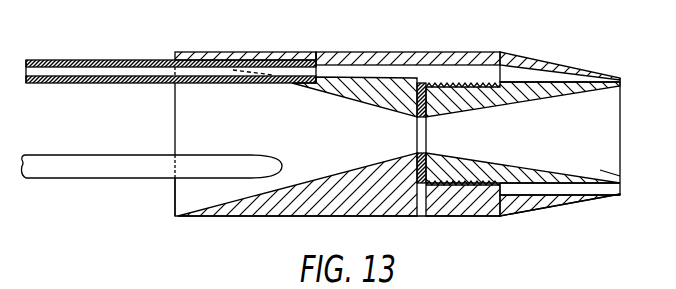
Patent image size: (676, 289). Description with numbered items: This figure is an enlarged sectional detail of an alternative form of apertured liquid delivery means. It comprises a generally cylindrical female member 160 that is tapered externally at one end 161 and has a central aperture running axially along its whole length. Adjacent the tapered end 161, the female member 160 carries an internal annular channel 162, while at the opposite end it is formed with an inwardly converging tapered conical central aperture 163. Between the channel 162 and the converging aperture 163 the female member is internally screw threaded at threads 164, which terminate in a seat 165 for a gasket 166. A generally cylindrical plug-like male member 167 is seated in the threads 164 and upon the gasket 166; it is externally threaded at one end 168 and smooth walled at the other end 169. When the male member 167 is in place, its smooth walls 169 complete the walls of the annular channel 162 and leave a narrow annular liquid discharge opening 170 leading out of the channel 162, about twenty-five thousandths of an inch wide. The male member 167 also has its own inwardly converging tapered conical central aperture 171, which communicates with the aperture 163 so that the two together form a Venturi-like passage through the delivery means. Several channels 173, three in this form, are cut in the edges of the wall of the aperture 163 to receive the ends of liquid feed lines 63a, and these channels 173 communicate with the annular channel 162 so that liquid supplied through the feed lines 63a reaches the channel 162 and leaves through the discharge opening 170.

The liquid feed lines 63a is at (74, 84).
The female member 160 is at (456, 107).
The tapered end 161 is at (565, 67).
The internal annular channel 162 is at (517, 75).
The converging tapered conical central aperture 163 is at (400, 185).
The screw threads 164 is at (457, 185).
The seat 165 is at (417, 181).
The gasket 166 is at (422, 181).
The male member 167 is at (460, 97).
The externally threaded end 168 is at (470, 178).
The smooth walled end 169 is at (545, 188).
The annular liquid discharge opening 170 is at (622, 191).
The converging tapered conical central aperture 171 is at (607, 173).
The channels 173 is at (281, 53).